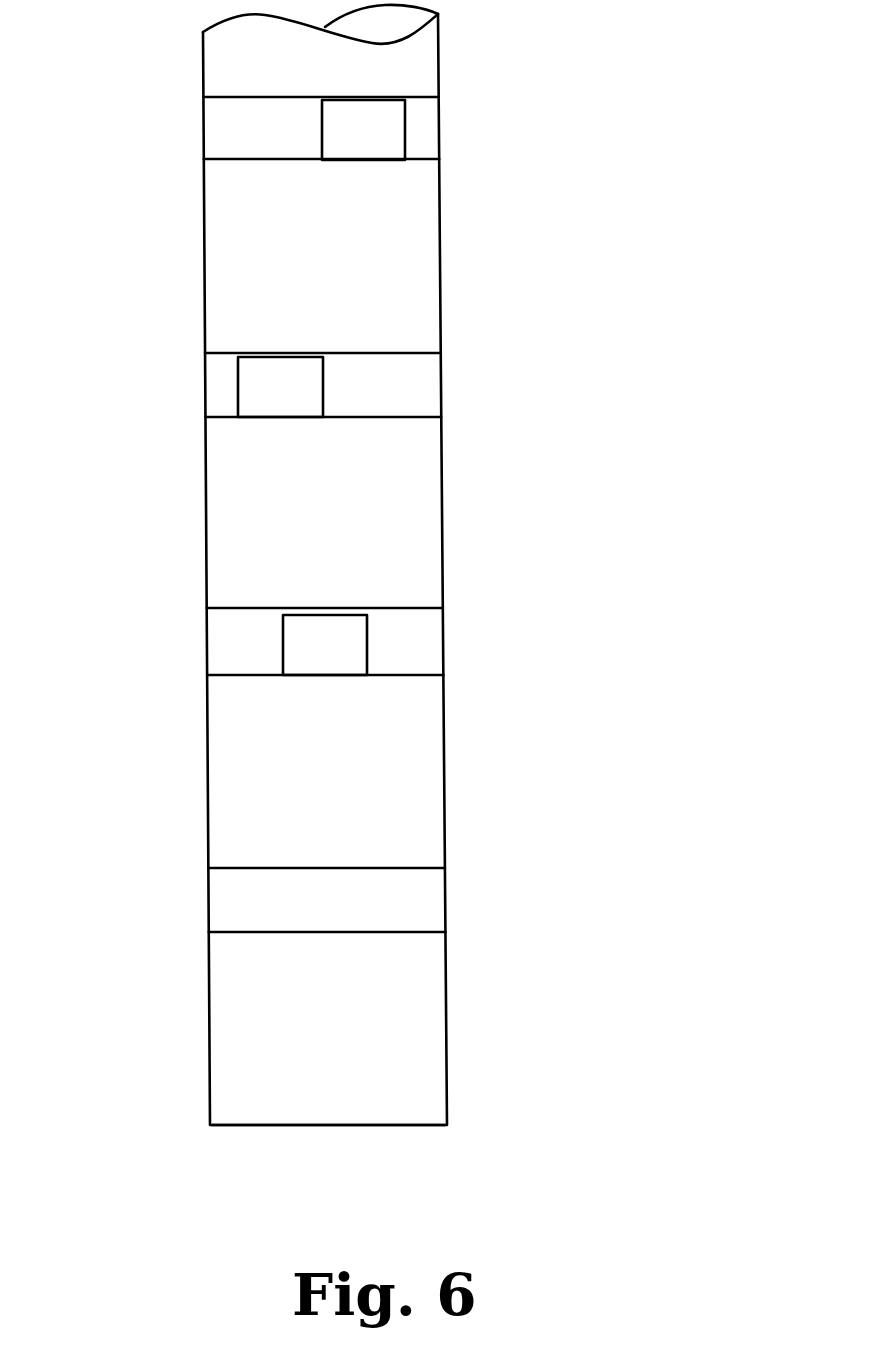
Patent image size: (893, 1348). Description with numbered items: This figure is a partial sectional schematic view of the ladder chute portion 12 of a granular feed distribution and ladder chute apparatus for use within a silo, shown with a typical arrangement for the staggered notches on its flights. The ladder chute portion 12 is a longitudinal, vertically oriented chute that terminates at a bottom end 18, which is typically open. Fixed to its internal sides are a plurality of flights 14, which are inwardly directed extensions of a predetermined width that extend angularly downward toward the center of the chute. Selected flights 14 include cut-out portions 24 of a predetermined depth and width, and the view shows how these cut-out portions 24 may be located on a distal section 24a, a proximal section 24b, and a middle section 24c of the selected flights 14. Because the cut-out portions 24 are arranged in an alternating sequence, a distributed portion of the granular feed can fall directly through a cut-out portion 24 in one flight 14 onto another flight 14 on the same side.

The ladder chute portion 12 is at (443, 520).
The flights 14 is at (253, 130).
The bottom end 18 is at (398, 1122).
The cut-out portions 24 is at (297, 406).
The distal section 24a is at (368, 131).
The proximal section 24b is at (285, 388).
The middle section 24c is at (328, 646).